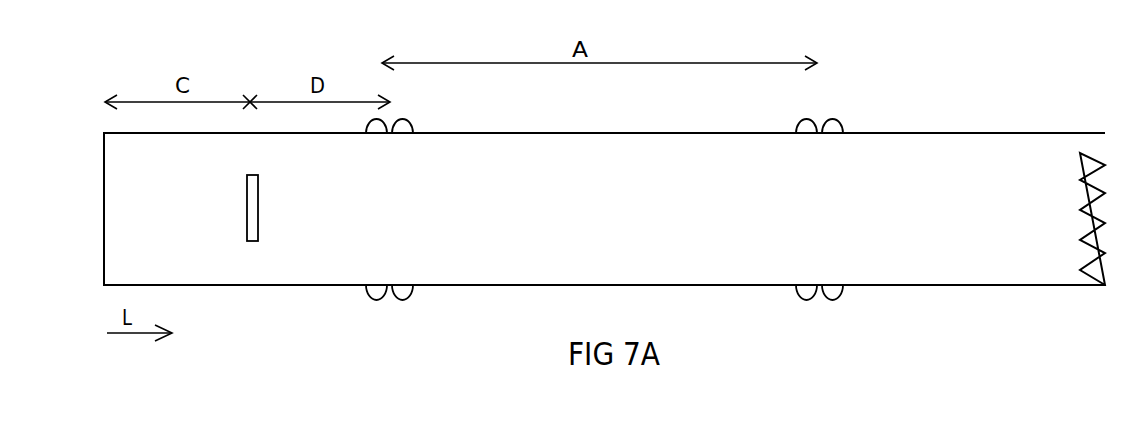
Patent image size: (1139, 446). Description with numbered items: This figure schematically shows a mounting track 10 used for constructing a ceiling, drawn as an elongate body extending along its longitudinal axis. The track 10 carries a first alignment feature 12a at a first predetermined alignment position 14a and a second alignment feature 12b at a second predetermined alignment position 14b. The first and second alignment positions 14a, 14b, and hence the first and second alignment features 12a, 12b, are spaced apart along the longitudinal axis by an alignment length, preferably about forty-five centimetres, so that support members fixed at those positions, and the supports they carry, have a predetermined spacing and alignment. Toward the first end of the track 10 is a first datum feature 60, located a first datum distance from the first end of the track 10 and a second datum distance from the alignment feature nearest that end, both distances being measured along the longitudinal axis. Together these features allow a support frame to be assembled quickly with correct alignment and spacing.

The track 10 is at (1059, 100).
The first alignment feature 12a is at (407, 159).
The second alignment feature 12b is at (834, 160).
The first predetermined alignment position 14a is at (402, 245).
The second predetermined alignment position 14b is at (799, 249).
The first datum feature 60 is at (214, 211).